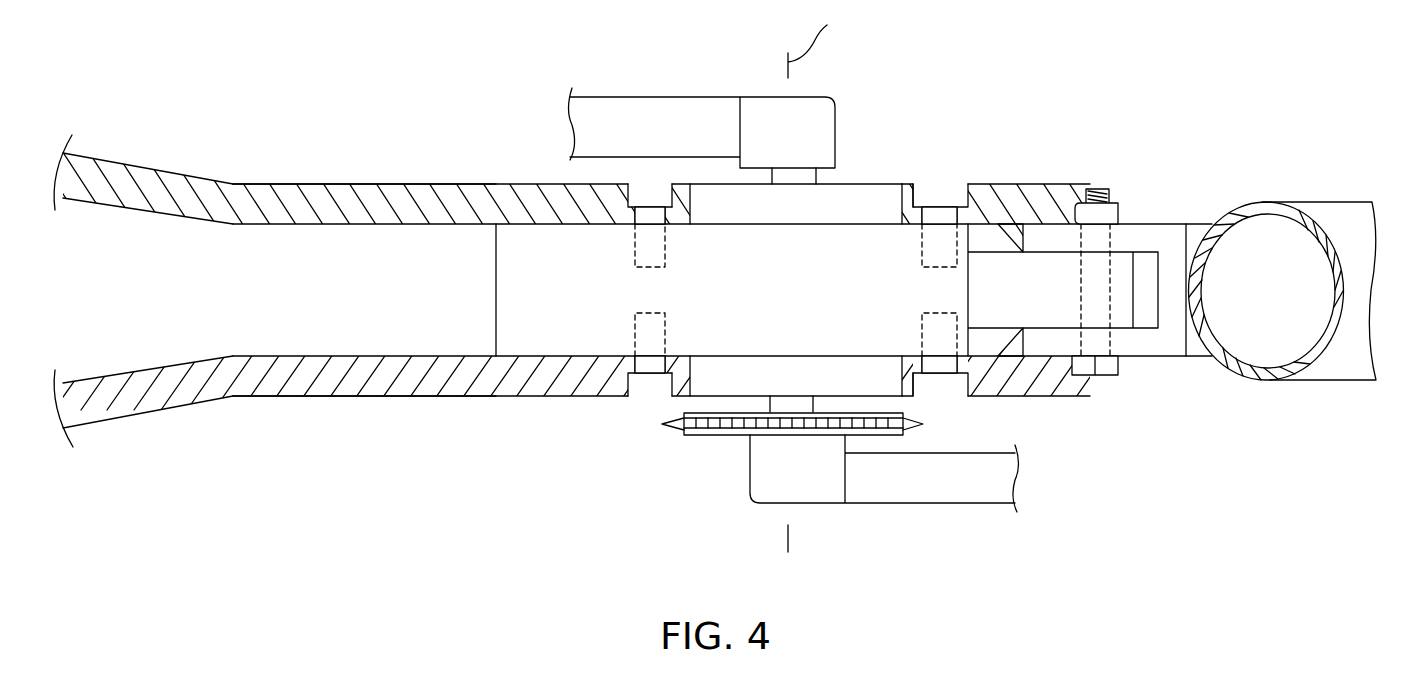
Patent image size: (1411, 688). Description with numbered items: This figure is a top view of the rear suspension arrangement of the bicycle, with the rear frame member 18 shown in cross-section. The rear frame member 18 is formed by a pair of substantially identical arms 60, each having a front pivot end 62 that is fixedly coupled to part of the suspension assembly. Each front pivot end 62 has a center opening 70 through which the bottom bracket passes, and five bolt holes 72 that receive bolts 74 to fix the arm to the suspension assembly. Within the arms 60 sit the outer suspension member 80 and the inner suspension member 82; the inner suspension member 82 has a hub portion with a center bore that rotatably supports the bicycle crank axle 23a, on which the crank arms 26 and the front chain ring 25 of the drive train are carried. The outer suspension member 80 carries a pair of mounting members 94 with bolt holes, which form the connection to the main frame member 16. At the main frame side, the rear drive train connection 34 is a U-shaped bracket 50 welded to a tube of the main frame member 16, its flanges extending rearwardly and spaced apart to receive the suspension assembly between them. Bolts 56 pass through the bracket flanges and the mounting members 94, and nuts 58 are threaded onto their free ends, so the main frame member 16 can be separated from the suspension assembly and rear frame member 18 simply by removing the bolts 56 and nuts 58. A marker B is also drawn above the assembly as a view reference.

The main frame member 16 is at (1318, 197).
The rear frame member 18 is at (252, 180).
The bicycle crank axle 23a is at (768, 404).
The front chain ring 25 is at (715, 433).
The crank arms 26 is at (702, 97).
The rear drive train connection 34 is at (1170, 359).
The U-shaped bracket 50 is at (1175, 222).
The bolts 56 is at (1120, 365).
The nuts 58 is at (1120, 212).
The arms 60 is at (366, 183).
The front pivot end 62 is at (468, 183).
The center opening 70 is at (690, 205).
The bolt holes 72 is at (660, 185).
The bolts 74 is at (645, 182).
The outer suspension member 80 is at (877, 243).
The inner suspension member 82 is at (878, 183).
The mounting members 94 is at (1067, 247).
The section line B is at (819, 285).